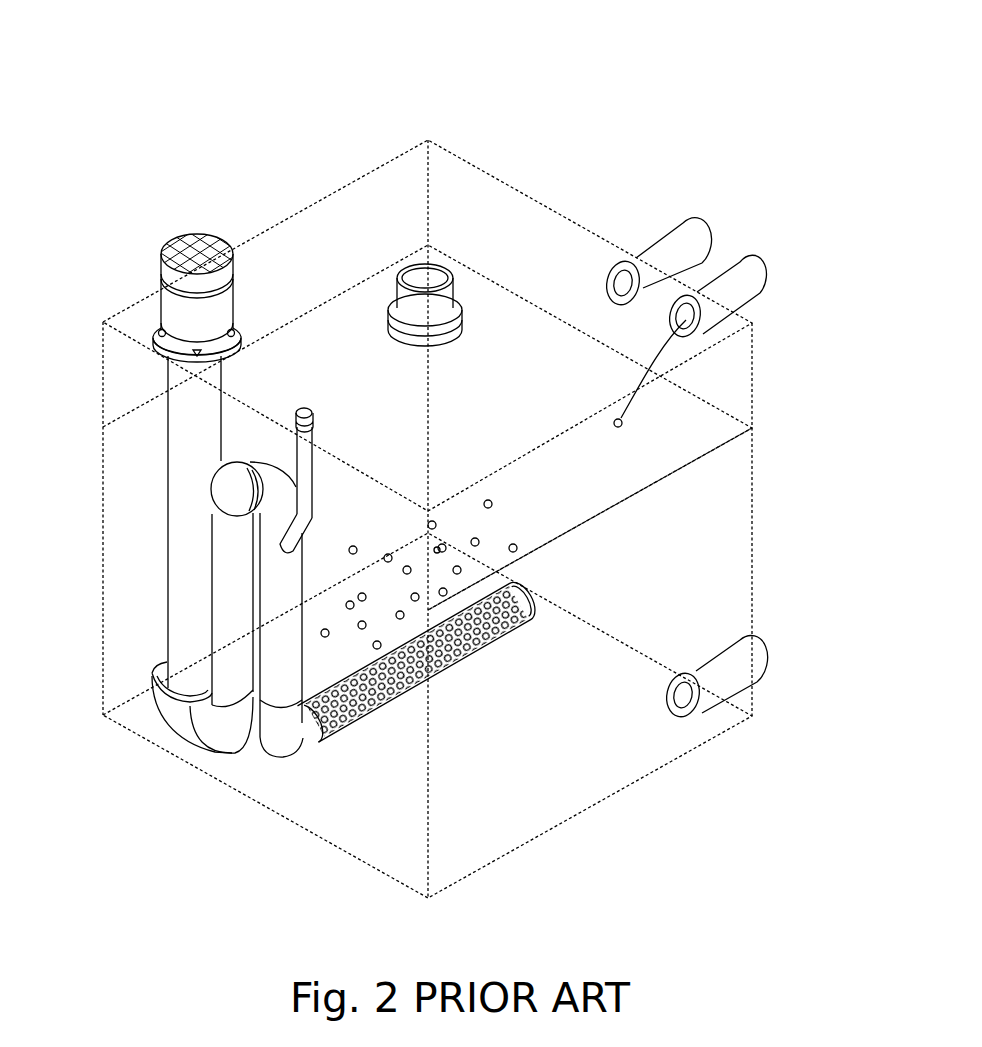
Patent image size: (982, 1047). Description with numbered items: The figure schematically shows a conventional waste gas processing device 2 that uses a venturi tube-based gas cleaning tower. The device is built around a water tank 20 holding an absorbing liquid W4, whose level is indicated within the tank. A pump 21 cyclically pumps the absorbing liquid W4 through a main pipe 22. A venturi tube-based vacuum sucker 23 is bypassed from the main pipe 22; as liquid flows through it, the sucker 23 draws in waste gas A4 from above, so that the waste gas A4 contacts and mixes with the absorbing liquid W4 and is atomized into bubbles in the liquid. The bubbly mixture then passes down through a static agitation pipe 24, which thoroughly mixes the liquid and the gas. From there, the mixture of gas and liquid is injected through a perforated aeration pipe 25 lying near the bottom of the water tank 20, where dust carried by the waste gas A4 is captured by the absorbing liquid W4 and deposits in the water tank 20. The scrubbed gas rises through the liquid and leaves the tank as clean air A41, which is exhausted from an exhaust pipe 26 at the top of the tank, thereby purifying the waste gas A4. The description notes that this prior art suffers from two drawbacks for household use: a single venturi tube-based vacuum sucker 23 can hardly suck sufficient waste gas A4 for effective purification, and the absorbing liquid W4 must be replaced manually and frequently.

The waste gas processing device 2 is at (546, 95).
The water tank 20 is at (752, 604).
The pump 21 is at (175, 705).
The main pipe 22 is at (273, 493).
The venturi tube-based vacuum sucker 23 is at (307, 452).
The static agitation pipe 24 is at (278, 645).
The aeration pipe 25 is at (445, 665).
The exhaust pipe 26 is at (417, 277).
The waste gas A4 is at (305, 398).
The clean air A41 is at (783, 262).
The absorbing liquid W4 is at (680, 467).